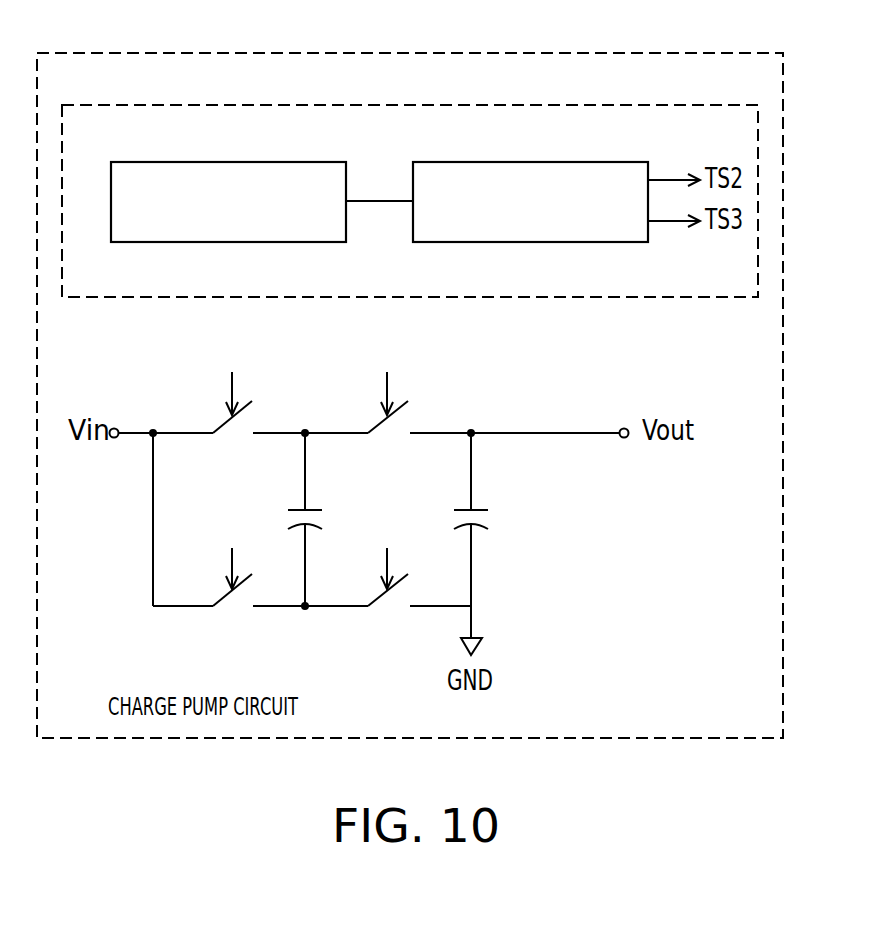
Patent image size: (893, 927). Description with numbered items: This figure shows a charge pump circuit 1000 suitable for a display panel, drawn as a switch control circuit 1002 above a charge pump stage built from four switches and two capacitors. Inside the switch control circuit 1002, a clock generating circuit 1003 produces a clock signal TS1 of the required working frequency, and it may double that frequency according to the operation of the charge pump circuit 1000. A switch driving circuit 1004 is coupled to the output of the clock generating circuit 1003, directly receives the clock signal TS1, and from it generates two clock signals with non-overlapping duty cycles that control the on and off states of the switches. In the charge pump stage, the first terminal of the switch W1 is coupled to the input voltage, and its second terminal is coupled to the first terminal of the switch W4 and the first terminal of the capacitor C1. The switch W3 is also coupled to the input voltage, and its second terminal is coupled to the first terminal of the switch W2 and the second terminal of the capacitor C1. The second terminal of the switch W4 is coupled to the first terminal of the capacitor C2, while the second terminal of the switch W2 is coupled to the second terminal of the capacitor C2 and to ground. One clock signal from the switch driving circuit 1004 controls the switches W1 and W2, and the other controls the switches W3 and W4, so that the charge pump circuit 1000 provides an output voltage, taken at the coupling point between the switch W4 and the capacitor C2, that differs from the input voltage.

The charge pump circuit 1000 is at (603, 53).
The switch control circuit 1002 is at (487, 104).
The clock generating circuit 1003 is at (228, 162).
The switch driving circuit 1004 is at (530, 162).
The clock signal TS1 is at (372, 200).
The switch W1 is at (256, 409).
The switch W2 is at (388, 582).
The switch W3 is at (243, 582).
The switch W4 is at (388, 409).
The capacitor C1 is at (325, 519).
The capacitor C2 is at (492, 544).